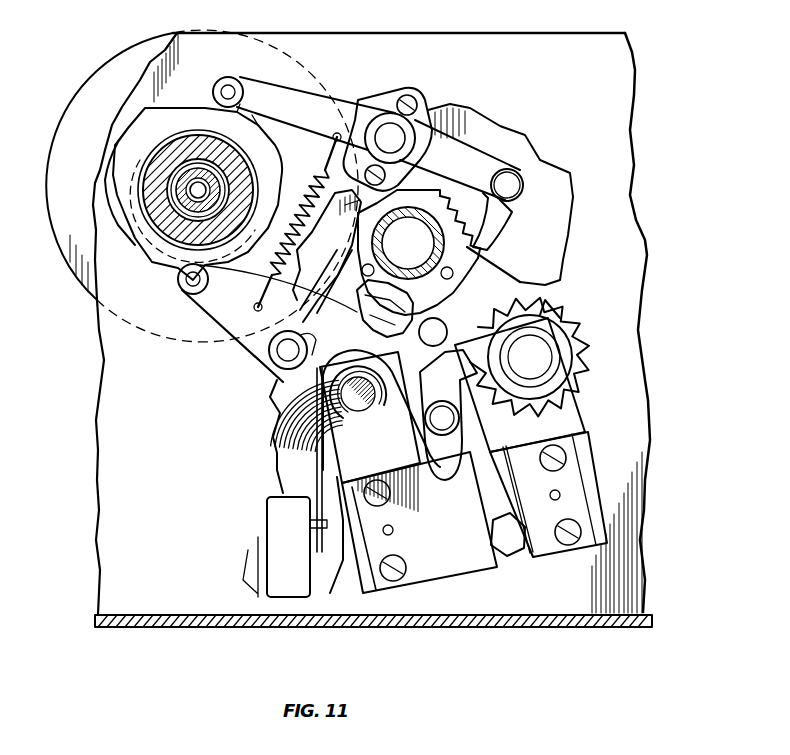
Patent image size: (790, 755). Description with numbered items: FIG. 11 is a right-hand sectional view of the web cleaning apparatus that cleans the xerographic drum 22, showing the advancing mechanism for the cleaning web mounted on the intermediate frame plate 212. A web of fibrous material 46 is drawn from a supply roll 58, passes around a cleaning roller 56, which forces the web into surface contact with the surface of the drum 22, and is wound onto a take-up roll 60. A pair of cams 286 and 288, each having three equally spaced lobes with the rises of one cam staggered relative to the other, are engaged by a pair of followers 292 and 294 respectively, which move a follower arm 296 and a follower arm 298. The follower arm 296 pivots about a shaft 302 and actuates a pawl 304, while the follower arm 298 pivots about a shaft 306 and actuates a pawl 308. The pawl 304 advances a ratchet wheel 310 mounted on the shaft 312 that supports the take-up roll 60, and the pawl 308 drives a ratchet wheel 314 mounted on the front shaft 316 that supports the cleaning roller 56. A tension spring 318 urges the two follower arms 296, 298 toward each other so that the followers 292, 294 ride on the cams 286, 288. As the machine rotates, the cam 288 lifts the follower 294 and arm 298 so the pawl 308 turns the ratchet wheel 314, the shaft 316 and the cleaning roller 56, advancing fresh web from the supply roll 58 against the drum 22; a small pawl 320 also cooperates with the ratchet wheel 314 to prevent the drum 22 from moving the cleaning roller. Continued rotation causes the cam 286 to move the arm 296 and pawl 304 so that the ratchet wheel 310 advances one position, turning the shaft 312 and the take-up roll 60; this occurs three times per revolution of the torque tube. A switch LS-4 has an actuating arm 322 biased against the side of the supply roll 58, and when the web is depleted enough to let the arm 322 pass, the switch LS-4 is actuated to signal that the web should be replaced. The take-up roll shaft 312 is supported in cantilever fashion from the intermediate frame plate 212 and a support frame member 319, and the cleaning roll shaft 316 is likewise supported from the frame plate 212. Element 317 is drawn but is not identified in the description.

The xerographic drum 22 is at (100, 90).
The intermediate frame plate 212 is at (626, 80).
The cam 286 is at (155, 118).
The cam 288 is at (110, 190).
The follower 292 is at (178, 284).
The follower 294 is at (220, 79).
The follower arm 296 is at (238, 340).
The follower arm 298 is at (350, 108).
The shaft 302 is at (297, 346).
The pawl 304 is at (432, 400).
The shaft 306 is at (403, 143).
The pawl 308 is at (498, 216).
The ratchet wheel 310 is at (556, 308).
The shaft 312 is at (530, 372).
The ratchet wheel 314 is at (485, 250).
The front shaft 316 is at (440, 183).
The cam 317 is at (361, 405).
The tension spring 318 is at (312, 178).
The support frame member 319 is at (578, 395).
The small pawl 320 is at (368, 356).
The actuating arm 322 is at (290, 458).
The web of fibrous material 46 is at (503, 266).
The cleaning roller 56 is at (355, 236).
The supply roll 58 is at (280, 416).
The take-up roll 60 is at (528, 352).
The switch LS-4 is at (276, 512).